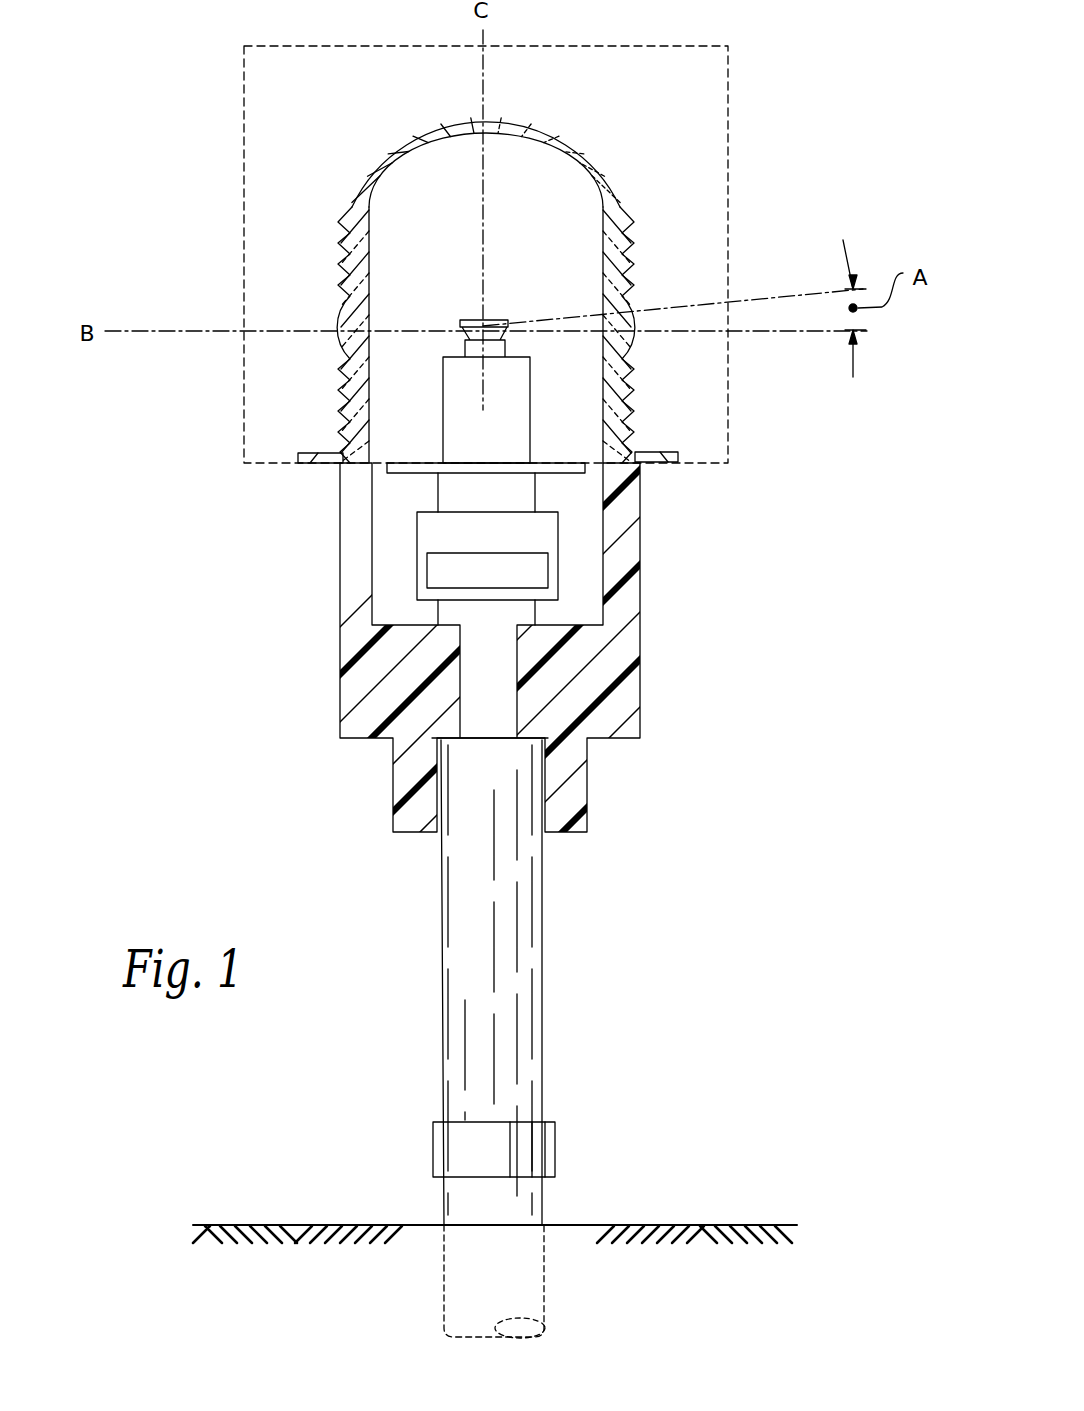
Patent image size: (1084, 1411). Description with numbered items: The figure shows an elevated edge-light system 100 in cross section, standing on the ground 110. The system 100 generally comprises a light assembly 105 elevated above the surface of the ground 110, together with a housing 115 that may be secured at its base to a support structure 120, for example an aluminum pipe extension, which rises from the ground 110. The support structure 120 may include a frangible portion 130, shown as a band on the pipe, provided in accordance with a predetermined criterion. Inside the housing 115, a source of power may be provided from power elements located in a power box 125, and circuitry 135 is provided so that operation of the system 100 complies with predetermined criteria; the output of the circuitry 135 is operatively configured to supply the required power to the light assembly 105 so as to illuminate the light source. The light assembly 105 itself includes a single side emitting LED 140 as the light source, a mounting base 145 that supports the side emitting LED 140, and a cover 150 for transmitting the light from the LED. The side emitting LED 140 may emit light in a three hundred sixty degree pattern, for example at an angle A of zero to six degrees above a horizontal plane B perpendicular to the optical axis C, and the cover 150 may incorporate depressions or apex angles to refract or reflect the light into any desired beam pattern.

The elevated edge-light system 100 is at (792, 97).
The light assembly 105 is at (363, 46).
The ground 110 is at (313, 1223).
The housing 115 is at (640, 640).
The support structure 120 is at (527, 973).
The power box 125 is at (417, 533).
The frangible portion 130 is at (542, 1146).
The circuitry 135 is at (427, 572).
The side emitting LED 140 is at (502, 318).
The mounting base 145 is at (415, 462).
The cover 150 is at (542, 128).